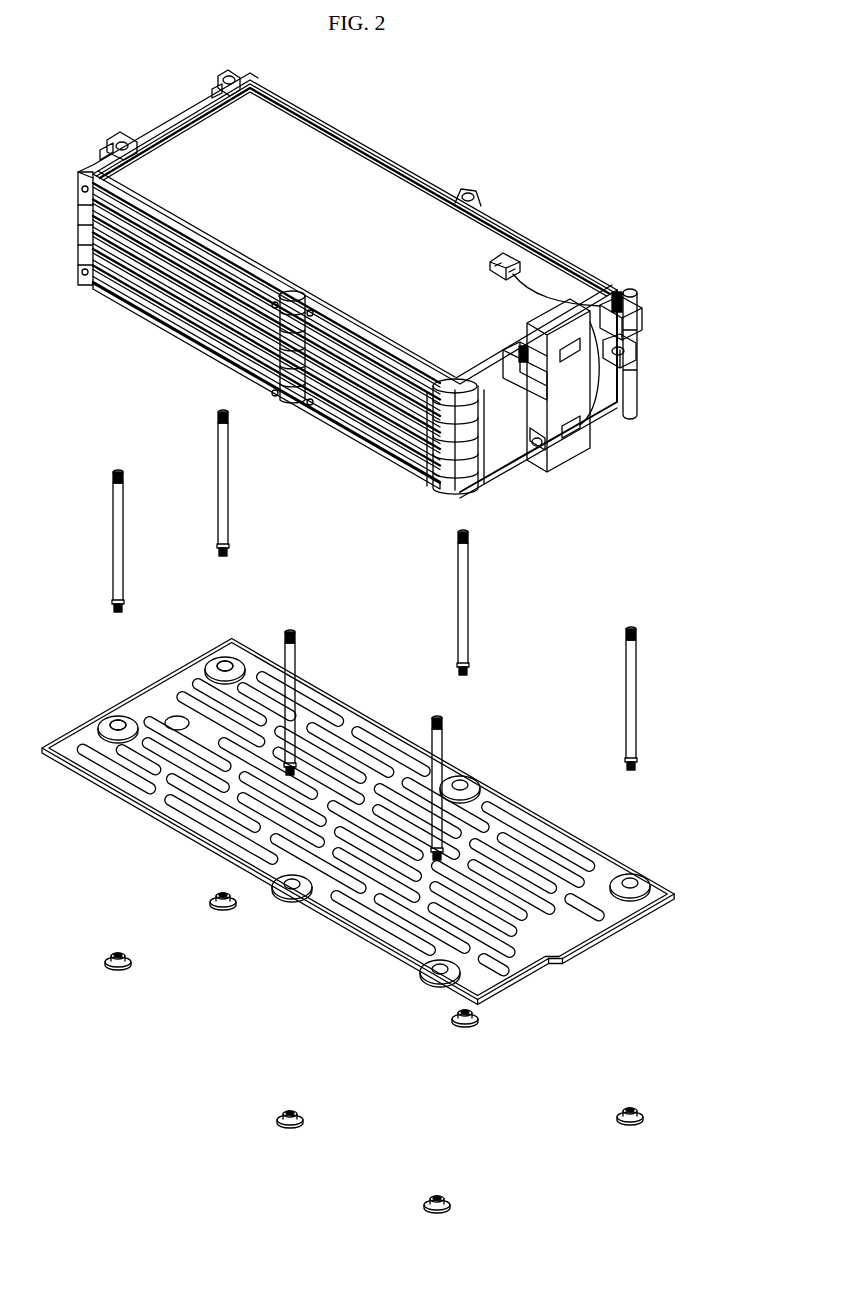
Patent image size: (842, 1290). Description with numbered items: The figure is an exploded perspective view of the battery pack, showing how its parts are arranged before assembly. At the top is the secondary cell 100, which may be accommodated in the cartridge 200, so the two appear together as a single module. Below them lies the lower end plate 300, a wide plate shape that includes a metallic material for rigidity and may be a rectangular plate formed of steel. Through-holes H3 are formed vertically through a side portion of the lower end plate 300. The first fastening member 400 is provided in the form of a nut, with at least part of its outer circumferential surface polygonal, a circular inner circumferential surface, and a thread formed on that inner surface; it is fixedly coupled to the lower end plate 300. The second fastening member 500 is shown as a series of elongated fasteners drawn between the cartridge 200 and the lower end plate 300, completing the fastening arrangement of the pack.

The secondary cell 100 is at (336, 284).
The cartridge 200 is at (78, 226).
The lower end plate 300 is at (557, 828).
The first fastening member 400 is at (211, 904).
The second fastening member 500 is at (124, 517).
The through-hole H3 is at (224, 661).